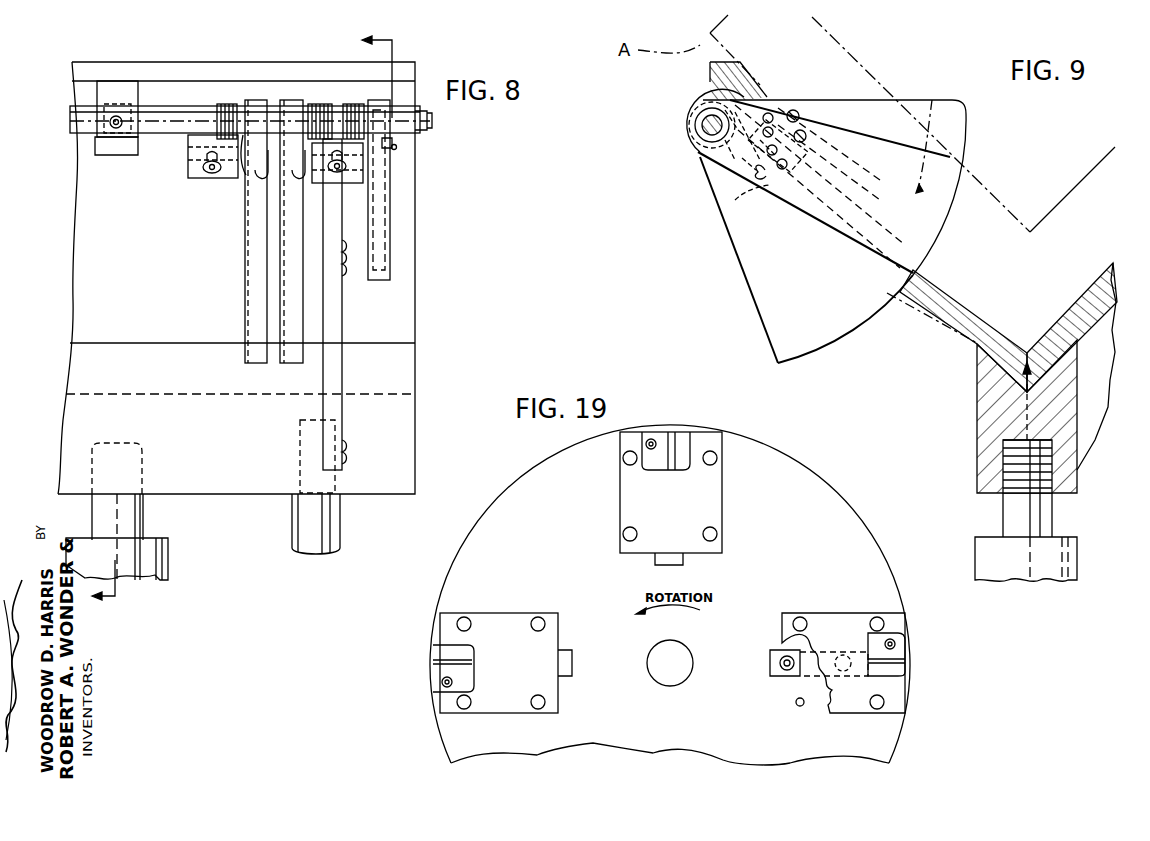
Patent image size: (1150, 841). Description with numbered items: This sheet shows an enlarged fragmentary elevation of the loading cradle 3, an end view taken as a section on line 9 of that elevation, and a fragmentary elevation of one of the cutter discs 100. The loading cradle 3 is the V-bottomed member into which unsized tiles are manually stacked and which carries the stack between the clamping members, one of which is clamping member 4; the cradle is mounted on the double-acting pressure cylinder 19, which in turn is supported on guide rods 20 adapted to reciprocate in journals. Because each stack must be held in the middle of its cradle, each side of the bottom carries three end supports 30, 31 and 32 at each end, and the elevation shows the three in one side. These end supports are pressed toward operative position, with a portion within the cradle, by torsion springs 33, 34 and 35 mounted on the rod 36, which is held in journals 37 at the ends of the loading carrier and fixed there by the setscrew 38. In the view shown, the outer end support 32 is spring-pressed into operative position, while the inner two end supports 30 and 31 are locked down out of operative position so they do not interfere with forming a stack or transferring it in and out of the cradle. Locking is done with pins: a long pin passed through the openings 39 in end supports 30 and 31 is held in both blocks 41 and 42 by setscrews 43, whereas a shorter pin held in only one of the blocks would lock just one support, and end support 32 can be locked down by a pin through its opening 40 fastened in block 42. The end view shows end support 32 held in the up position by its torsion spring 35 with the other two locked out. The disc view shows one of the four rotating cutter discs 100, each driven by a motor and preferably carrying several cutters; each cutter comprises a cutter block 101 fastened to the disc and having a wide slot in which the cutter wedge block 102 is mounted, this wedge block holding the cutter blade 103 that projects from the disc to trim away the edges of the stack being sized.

In FIG. 8, the loading cradle 3 is at (422, 292).
In FIG. 9, the loading cradle 3 is at (947, 317).
In FIG. 9, the clamping member 4 is at (1005, 212).
In FIG. 8, the section line 9— 9 is at (247, 313).
In FIG. 8, the double-acting pressure cylinder 19 is at (168, 557).
In FIG. 9, the double-acting pressure cylinder 19 is at (1040, 580).
In FIG. 8, the guide rods 20 is at (312, 553).
In FIG. 8, the end support 30 is at (255, 288).
In FIG. 8, the end support 31 is at (290, 308).
In FIG. 9, the end support 31 is at (752, 297).
In FIG. 8, the end support 32 is at (385, 240).
In FIG. 9, the end support 32 is at (947, 100).
In FIG. 8, the torsion spring 33 is at (232, 104).
In FIG. 8, the torsion spring 34 is at (318, 104).
In FIG. 9, the torsion spring 34 is at (740, 170).
In FIG. 8, the torsion spring 35 is at (354, 104).
In FIG. 9, the torsion spring 35 is at (700, 152).
In FIG. 8, the rod 36 is at (80, 116).
In FIG. 9, the rod 36 is at (698, 122).
In FIG. 8, the journals 37 is at (428, 136).
In FIG. 8, the setscrew 38 is at (117, 128).
In FIG. 8, the openings 39 is at (255, 178).
In FIG. 9, the openings 39 is at (802, 132).
In FIG. 8, the opening 40 is at (394, 148).
In FIG. 9, the opening 40 is at (793, 112).
In FIG. 8, the block 41 is at (188, 166).
In FIG. 8, the block 42 is at (363, 172).
In FIG. 9, the block 42 is at (760, 182).
In FIG. 8, the setscrews 43 is at (206, 176).
In FIG. 9, the setscrews 43 is at (735, 200).
In FIG. 19, the cutter disc 100 is at (888, 740).
In FIG. 19, the cutter block 101 is at (715, 543).
In FIG. 19, the cutter wedge block 102 is at (447, 680).
In FIG. 19, the cutter blade 103 is at (680, 445).